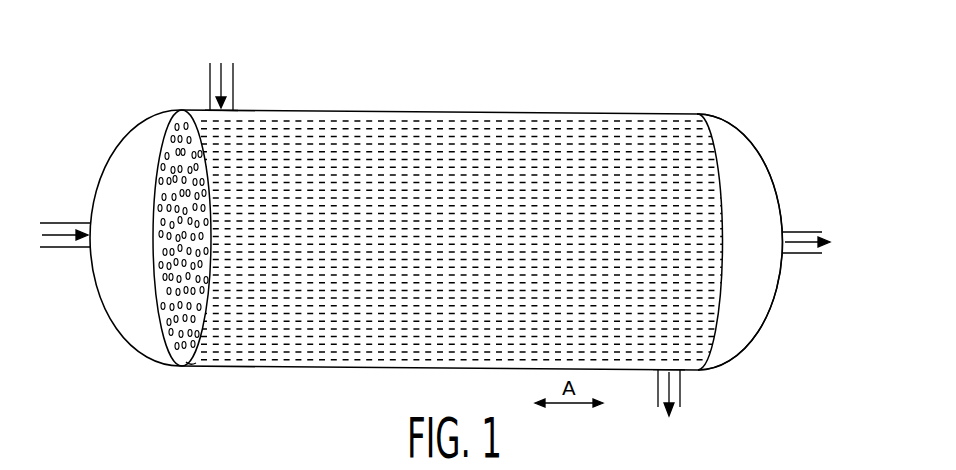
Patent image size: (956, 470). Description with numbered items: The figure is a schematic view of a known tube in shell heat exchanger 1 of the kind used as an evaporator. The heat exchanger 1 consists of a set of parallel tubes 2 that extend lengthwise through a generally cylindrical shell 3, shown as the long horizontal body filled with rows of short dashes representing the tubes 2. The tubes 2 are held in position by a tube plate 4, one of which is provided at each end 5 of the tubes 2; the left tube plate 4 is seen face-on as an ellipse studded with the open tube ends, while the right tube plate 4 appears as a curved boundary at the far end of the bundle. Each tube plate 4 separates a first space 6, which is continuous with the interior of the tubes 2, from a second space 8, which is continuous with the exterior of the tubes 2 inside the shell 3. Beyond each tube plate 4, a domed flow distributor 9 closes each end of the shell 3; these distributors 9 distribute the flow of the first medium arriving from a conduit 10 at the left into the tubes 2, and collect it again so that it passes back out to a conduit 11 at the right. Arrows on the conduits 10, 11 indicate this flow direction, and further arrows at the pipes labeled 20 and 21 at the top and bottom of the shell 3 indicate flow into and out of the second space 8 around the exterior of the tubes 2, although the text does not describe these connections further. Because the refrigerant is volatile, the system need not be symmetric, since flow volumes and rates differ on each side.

The tube in shell heat exchanger 1 is at (435, 232).
The parallel tubes 2 is at (500, 162).
The cylindrical shell 3 is at (347, 111).
The tube plate 4 is at (172, 366).
The end of the tubes 5 is at (190, 368).
The first space 6 is at (749, 187).
The second space 8 is at (253, 118).
The domed flow distributor 9 is at (119, 336).
The conduit 10 is at (81, 249).
The conduit 11 is at (797, 230).
The shell-side inlet 20 is at (234, 68).
The shell-side outlet 21 is at (681, 385).